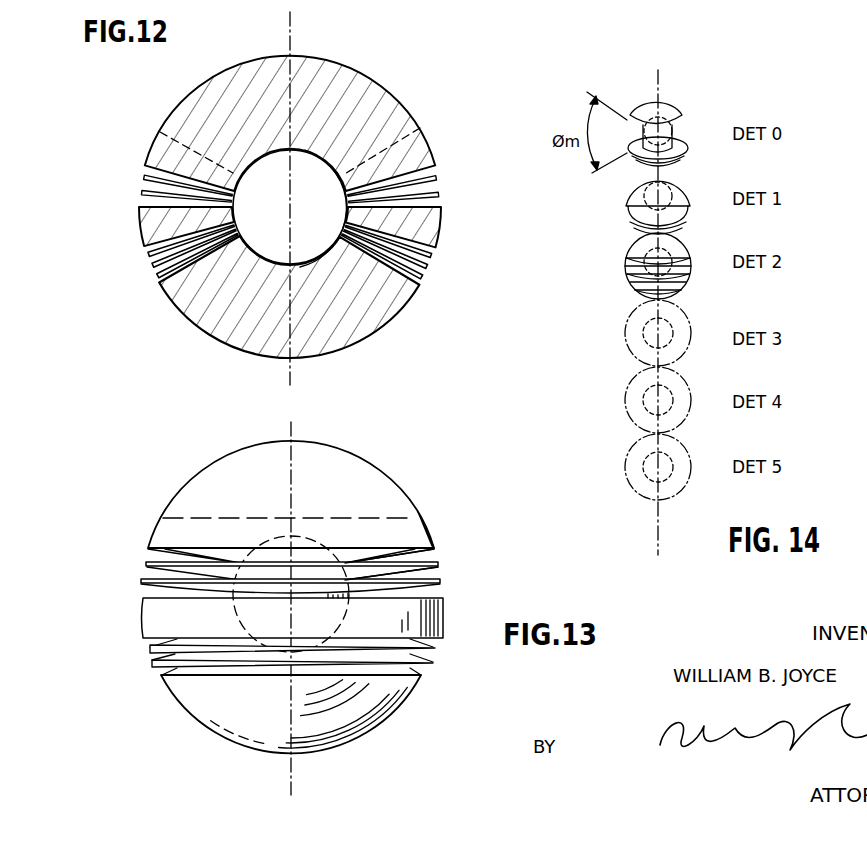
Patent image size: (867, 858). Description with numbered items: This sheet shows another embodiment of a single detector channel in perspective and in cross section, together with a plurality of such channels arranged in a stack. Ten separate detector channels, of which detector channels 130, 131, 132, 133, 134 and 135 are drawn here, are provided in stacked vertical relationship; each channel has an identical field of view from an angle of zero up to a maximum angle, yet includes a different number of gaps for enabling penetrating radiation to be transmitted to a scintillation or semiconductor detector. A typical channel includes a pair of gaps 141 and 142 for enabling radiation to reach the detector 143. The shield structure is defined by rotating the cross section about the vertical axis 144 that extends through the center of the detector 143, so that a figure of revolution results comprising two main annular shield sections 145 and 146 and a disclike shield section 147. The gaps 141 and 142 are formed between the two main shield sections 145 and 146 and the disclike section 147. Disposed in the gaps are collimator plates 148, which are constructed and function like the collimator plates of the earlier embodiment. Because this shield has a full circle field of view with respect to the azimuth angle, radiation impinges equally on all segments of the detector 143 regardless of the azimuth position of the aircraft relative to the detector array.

In FIG. 14, the detector channel 130 is at (680, 128).
In FIG. 14, the detector channel 131 is at (680, 186).
In FIG. 14, the detector channel 132 is at (683, 247).
In FIG. 14, the detector channel 133 is at (680, 320).
In FIG. 14, the detector channel 134 is at (680, 388).
In FIG. 14, the detector channel 135 is at (680, 451).
In FIG. 12, the gap 141 is at (128, 185).
In FIG. 13, the gap 141 is at (128, 558).
In FIG. 12, the gap 142 is at (421, 227).
In FIG. 13, the gap 142 is at (146, 669).
In FIG. 12, the detector 143 is at (323, 196).
In FIG. 13, the detector 143 is at (423, 598).
In FIG. 12, the vertical axis 144 is at (298, 46).
In FIG. 12, the main annular shield section 145 is at (192, 104).
In FIG. 13, the main annular shield section 145 is at (208, 478).
In FIG. 12, the main annular shield section 146 is at (217, 318).
In FIG. 13, the main annular shield section 146 is at (370, 704).
In FIG. 13, the disclike shield section 147 is at (441, 630).
In FIG. 12, the collimator plates 148 is at (434, 179).
In FIG. 13, the collimator plates 148 is at (437, 563).